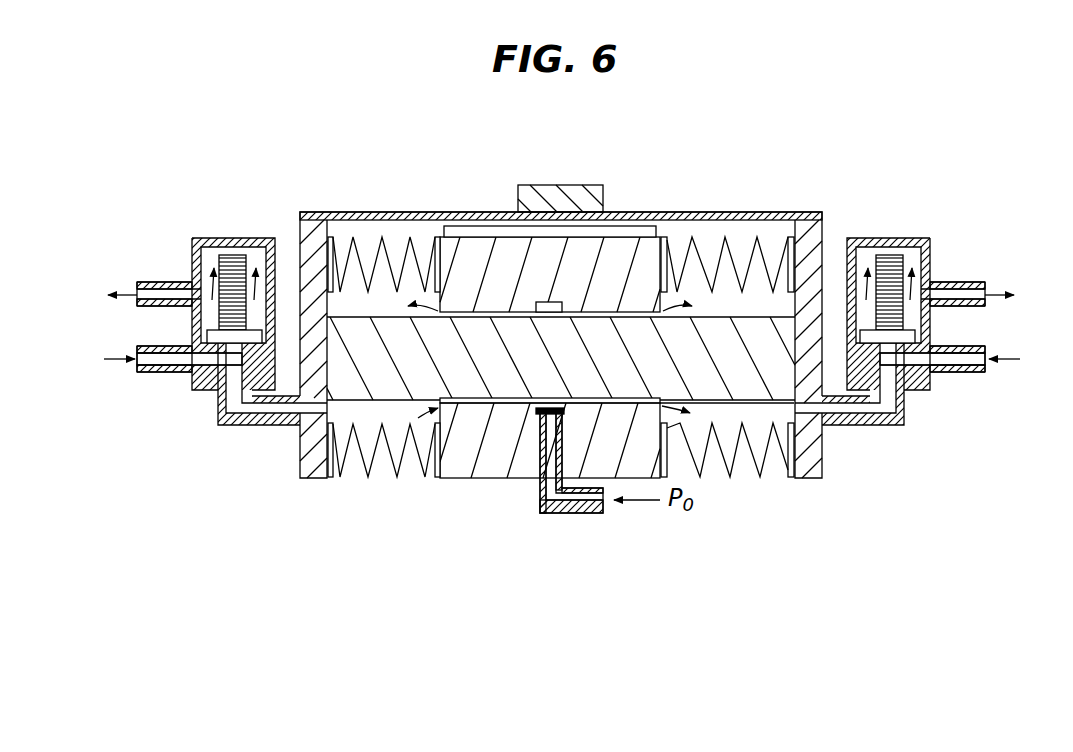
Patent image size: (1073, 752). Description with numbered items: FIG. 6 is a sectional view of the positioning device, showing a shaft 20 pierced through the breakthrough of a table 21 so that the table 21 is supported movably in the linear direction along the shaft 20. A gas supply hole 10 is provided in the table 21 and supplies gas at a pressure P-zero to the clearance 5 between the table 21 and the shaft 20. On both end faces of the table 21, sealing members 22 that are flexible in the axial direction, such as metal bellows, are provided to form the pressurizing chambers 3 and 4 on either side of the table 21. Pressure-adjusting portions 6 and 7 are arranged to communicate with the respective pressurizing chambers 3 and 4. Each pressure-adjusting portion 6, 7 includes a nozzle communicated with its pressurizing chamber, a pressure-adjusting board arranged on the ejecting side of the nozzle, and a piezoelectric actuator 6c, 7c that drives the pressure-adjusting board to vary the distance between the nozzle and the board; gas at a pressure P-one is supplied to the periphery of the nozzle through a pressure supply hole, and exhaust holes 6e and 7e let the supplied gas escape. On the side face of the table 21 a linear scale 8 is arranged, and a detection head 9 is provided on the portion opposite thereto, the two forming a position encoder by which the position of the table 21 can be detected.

The pressurizing chamber 3 is at (378, 407).
The pressurizing chamber 4 is at (727, 424).
The clearance 5 is at (514, 404).
The pressure-adjusting portion 6 is at (202, 303).
The piezoelectric actuator 6c is at (231, 255).
The exhaust hole 6e is at (153, 282).
The pressure-adjusting portion 7 is at (921, 303).
The piezoelectric actuator 7c is at (893, 255).
The exhaust hole 7e is at (963, 282).
The linear scale 8 is at (467, 224).
The detection head 9 is at (552, 198).
The gas supply hole 10 is at (581, 515).
The shaft 20 is at (735, 384).
The table 21 is at (462, 466).
The sealing member 22 is at (368, 250).